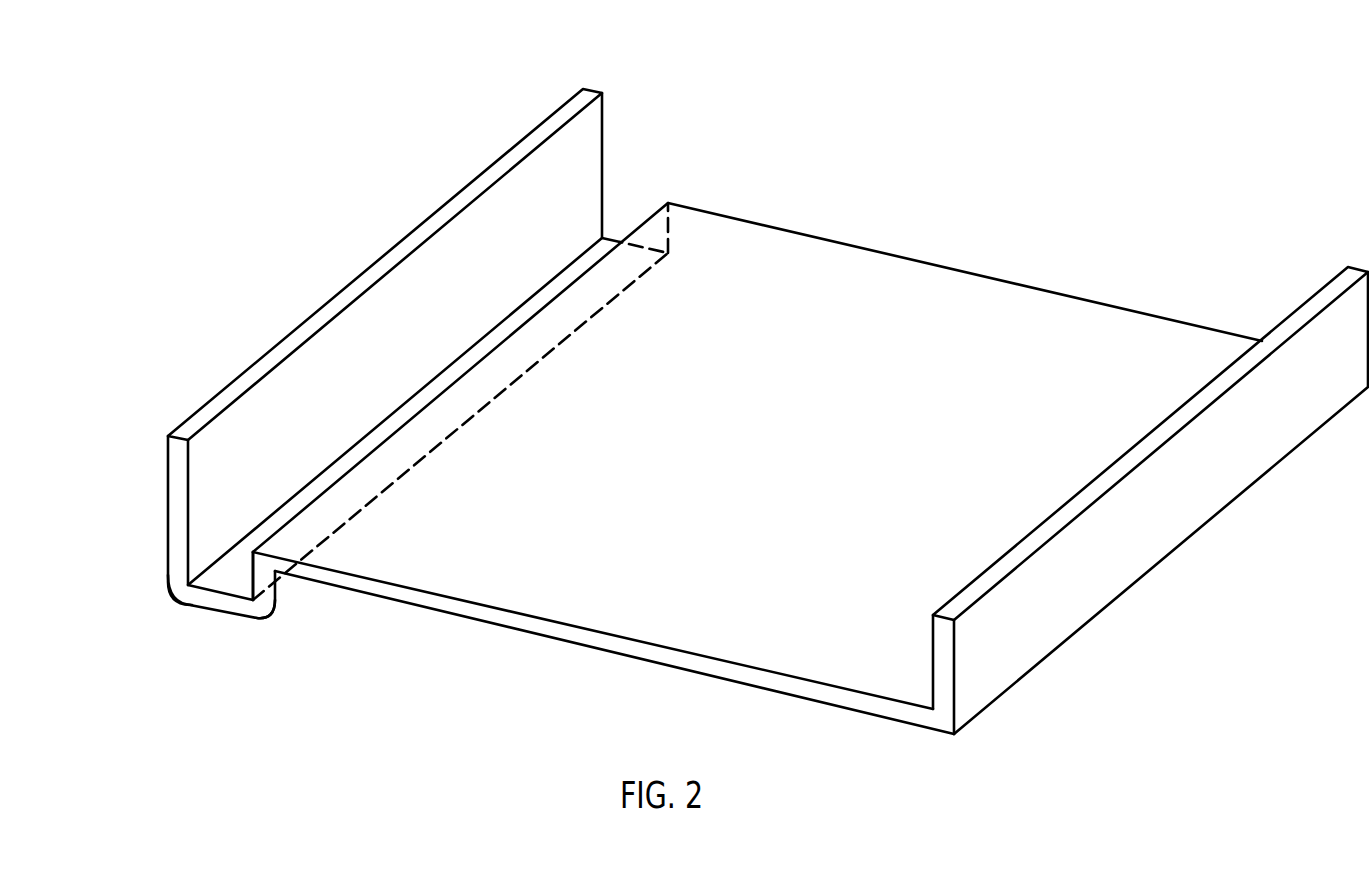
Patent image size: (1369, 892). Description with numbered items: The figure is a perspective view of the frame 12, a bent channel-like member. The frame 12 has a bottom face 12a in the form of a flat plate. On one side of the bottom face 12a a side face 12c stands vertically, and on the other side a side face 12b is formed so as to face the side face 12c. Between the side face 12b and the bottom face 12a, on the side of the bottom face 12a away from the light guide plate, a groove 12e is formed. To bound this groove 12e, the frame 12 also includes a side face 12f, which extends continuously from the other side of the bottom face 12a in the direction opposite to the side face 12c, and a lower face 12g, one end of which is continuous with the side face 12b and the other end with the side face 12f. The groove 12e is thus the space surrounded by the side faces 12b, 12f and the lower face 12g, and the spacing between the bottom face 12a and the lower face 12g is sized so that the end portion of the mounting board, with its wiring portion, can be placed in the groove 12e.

The frame 12 is at (738, 411).
The bottom face 12a is at (698, 603).
The side face 12b is at (179, 524).
The side face 12c is at (1180, 503).
The groove 12e is at (236, 574).
The side face 12f is at (352, 500).
The lower face 12g is at (250, 579).